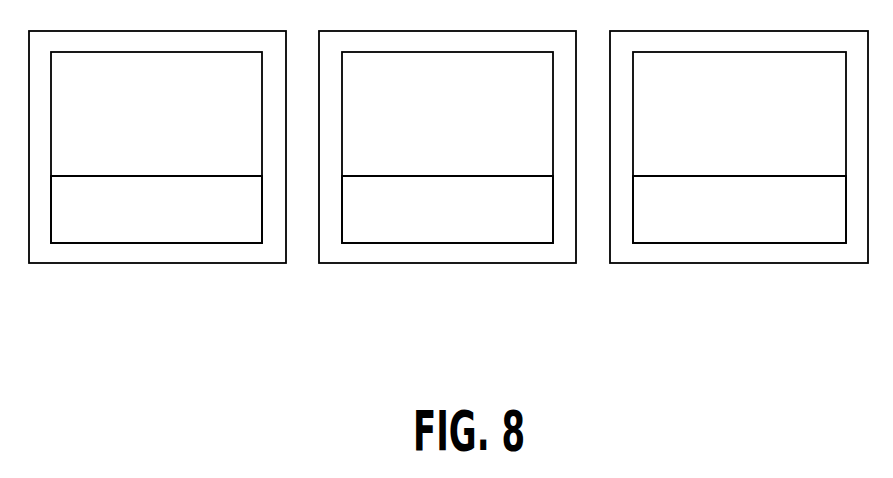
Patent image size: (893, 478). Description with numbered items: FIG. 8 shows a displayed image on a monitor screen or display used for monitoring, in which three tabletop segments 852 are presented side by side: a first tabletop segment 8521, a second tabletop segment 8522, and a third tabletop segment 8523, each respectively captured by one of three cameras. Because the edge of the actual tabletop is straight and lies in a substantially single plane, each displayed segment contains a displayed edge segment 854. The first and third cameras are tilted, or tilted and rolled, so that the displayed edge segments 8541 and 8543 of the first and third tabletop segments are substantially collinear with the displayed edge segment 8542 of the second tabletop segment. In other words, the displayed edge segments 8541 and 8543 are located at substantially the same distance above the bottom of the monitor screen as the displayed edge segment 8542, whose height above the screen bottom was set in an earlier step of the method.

The tabletop segment 852 is at (448, 209).
The tabletop segment 8521 is at (160, 222).
The tabletop segment 8522 is at (457, 222).
The tabletop segment 8523 is at (753, 222).
The displayed edge segment 854 is at (448, 145).
The displayed edge segment 8541 is at (193, 176).
The displayed edge segment 8542 is at (470, 176).
The displayed edge segment 8543 is at (763, 176).